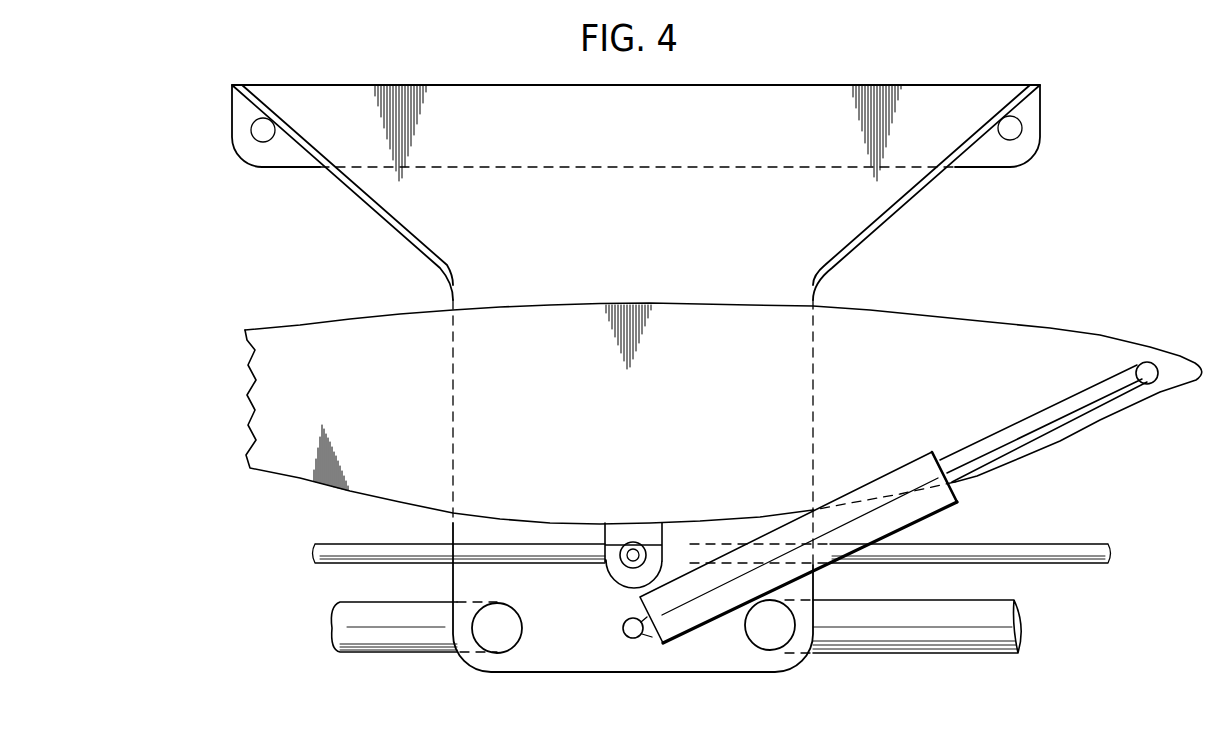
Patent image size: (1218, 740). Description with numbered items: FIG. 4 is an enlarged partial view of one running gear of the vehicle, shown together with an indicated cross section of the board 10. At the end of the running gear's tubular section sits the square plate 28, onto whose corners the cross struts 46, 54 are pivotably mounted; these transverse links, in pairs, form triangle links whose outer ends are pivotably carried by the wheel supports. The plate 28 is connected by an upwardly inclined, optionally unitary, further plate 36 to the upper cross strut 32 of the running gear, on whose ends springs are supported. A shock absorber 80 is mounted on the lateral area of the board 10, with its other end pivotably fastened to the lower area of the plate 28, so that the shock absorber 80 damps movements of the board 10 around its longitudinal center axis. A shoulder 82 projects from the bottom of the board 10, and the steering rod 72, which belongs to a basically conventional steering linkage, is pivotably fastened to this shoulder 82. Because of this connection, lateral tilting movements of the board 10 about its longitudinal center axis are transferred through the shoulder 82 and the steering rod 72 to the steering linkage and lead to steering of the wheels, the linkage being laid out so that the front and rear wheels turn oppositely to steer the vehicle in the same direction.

The board 10 is at (920, 322).
The plate 28 is at (702, 658).
The upper cross strut 32 is at (1034, 125).
The further plate 36 is at (877, 215).
The cross strut 46 is at (922, 637).
The cross strut 54 is at (397, 640).
The steering rod 72 is at (352, 554).
The shock absorber 80 is at (952, 487).
The shoulder 82 is at (628, 560).